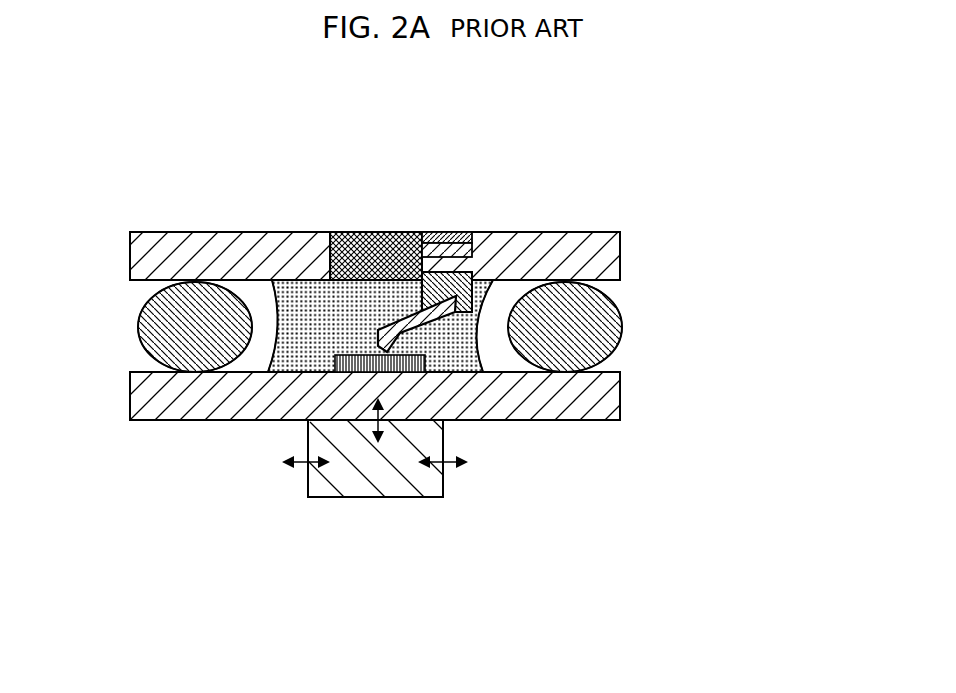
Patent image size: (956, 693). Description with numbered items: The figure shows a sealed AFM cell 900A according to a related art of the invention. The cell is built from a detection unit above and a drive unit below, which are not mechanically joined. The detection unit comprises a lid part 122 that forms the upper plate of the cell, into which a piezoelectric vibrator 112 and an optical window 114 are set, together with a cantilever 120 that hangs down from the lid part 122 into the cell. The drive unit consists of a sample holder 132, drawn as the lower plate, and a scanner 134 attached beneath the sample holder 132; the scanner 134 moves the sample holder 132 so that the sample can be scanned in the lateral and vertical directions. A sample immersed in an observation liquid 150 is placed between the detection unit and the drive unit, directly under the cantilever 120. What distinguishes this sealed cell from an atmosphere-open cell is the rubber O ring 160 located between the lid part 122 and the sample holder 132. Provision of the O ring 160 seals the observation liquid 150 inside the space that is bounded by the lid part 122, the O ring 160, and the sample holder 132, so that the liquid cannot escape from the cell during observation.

The sealed AFM cell 900A is at (568, 138).
The lid part 122 is at (613, 266).
The sample holder 132 is at (580, 405).
The scanner 134 is at (383, 475).
The rubber O ring 160 is at (157, 335).
The observation liquid 150 is at (308, 283).
The cantilever 120 is at (400, 300).
The optical window 114 is at (413, 237).
The piezoelectric vibrator 112 is at (478, 250).